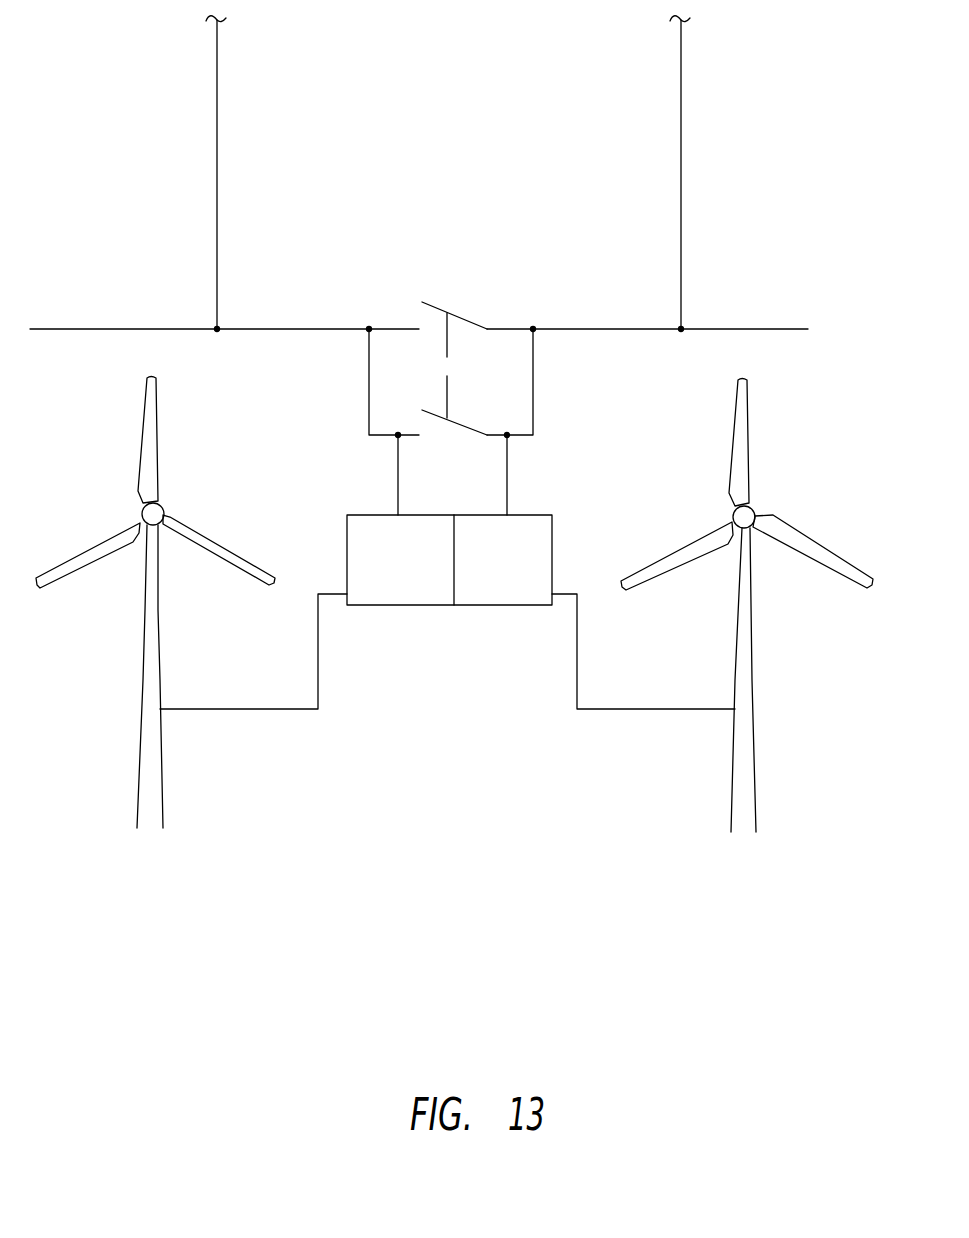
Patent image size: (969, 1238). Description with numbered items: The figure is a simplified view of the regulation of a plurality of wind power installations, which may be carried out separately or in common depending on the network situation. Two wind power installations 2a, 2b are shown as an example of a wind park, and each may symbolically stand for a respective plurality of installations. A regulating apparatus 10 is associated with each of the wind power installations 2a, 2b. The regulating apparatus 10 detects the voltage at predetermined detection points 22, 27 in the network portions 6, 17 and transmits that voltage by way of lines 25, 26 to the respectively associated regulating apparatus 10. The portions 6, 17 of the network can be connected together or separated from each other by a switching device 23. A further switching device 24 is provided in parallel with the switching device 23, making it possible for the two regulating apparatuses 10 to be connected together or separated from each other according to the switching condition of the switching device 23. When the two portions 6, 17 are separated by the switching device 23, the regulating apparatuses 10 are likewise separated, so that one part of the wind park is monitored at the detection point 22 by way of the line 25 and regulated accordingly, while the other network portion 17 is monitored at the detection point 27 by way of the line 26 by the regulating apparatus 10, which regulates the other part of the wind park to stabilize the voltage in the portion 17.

The network portion 6 is at (224, 174).
The network portion 17 is at (647, 174).
The detection point 22 is at (389, 365).
The switching device 23 is at (454, 318).
The switching device 24 is at (454, 417).
The line 25 is at (377, 474).
The line 26 is at (523, 474).
The detection point 27 is at (519, 365).
The regulating apparatus 10 is at (402, 576).
The wind power installation 2a is at (150, 780).
The wind power installation 2b is at (748, 782).